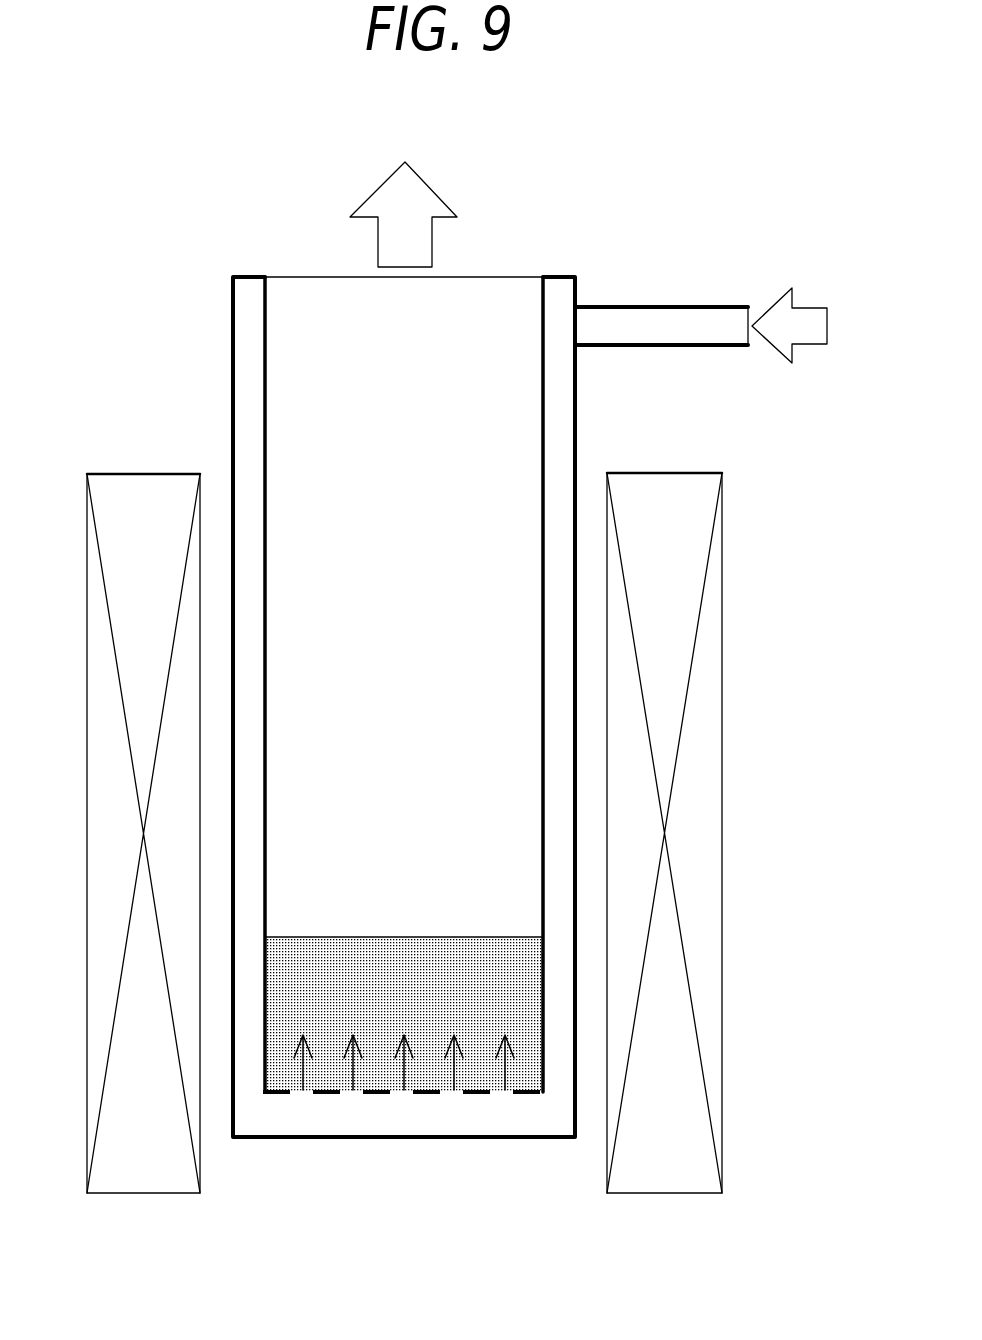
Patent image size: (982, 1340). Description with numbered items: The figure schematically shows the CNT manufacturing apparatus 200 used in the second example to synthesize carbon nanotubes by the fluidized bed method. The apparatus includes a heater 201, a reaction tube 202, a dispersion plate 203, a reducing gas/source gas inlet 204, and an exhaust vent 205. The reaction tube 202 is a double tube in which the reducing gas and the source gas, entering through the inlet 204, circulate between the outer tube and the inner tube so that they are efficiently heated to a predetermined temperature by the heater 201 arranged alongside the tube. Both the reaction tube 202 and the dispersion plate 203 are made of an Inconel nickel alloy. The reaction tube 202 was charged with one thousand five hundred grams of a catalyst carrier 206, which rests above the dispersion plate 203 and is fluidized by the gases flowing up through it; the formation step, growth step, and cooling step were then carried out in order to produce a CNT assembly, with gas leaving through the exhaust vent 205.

The CNT manufacturing apparatus 200 is at (683, 158).
The heater 201 is at (135, 474).
The reaction tube 202 is at (232, 445).
The dispersion plate 203 is at (375, 1095).
The reducing gas/source gas inlet 204 is at (667, 307).
The exhaust vent 205 is at (495, 277).
The catalyst carrier 206 is at (407, 985).